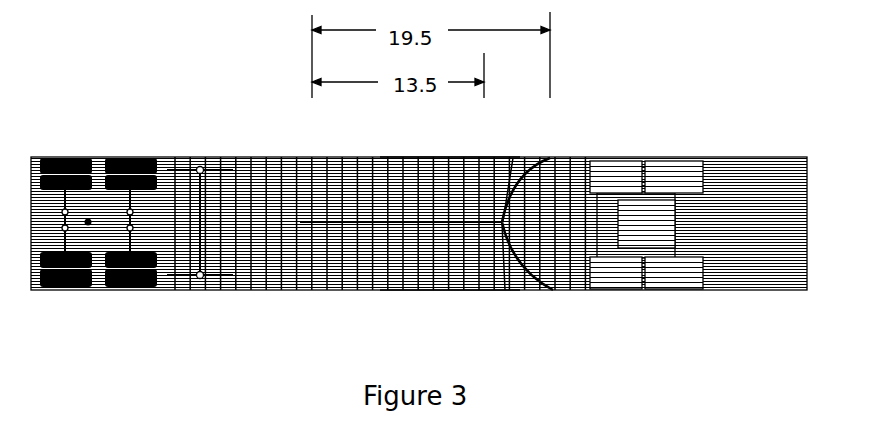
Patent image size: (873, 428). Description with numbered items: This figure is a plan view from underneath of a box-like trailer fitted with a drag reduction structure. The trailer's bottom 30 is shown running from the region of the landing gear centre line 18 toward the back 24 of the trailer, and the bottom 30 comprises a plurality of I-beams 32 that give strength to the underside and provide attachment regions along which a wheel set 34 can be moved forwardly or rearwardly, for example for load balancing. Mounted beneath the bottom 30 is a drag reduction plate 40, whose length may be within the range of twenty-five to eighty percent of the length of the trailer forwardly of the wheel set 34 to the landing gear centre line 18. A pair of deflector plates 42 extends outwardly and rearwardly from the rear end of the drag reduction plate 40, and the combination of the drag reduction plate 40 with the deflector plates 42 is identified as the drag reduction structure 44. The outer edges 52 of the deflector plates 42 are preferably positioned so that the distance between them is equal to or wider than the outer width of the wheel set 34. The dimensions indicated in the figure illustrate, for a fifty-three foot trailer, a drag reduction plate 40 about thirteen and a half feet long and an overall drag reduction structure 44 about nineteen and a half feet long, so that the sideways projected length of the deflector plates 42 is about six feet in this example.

The landing gear centre line 18 is at (203, 160).
The back 24 is at (808, 226).
The bottom 30 is at (275, 278).
The I-beams 32 is at (446, 166).
The wheel set 34 is at (649, 148).
The drag reduction plate 40 is at (342, 222).
The deflector plates 42 is at (513, 158).
The drag reduction structure 44 is at (427, 258).
The outer edges 52 is at (551, 159).